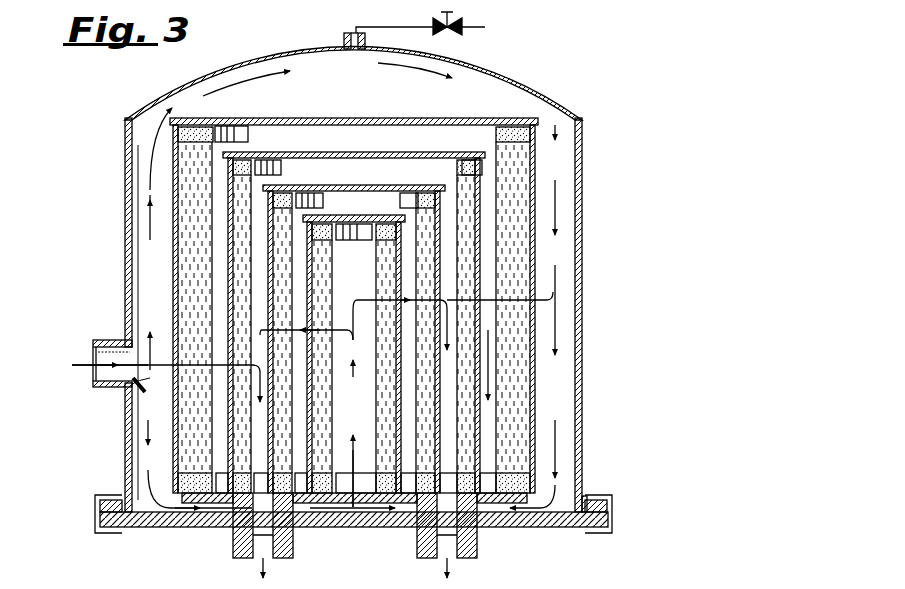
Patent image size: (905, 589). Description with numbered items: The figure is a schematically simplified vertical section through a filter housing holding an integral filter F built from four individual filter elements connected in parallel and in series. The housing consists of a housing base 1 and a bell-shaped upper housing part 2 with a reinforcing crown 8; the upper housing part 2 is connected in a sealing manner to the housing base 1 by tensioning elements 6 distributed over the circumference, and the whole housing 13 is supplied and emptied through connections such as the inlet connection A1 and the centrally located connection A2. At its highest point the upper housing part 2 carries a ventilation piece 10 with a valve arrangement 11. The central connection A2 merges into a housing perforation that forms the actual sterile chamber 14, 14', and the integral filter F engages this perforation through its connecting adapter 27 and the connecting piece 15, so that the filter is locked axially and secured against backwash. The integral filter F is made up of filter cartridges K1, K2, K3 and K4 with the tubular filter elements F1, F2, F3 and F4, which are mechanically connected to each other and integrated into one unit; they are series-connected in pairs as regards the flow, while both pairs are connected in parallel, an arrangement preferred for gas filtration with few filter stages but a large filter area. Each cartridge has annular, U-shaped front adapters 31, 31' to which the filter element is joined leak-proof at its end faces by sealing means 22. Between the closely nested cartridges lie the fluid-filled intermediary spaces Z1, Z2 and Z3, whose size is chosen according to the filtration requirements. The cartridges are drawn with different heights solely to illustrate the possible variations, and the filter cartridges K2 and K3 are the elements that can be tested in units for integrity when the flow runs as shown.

The housing base 1 is at (147, 525).
The upper housing part 2 is at (580, 284).
The tensioning elements 6 is at (95, 510).
The reinforcing crown 8 is at (587, 494).
The ventilation piece 10 is at (343, 45).
The valve arrangement 11 is at (456, 36).
The housing interior 13 is at (137, 197).
The sterile chamber 14 is at (373, 568).
The sterile chamber 14' is at (354, 324).
The connecting piece 15 is at (276, 530).
The sealing means 22 is at (510, 143).
The connecting adapter 27 is at (488, 505).
The front adapter 31 is at (354, 151).
The front adapter 31' is at (348, 159).
The connection A1 is at (110, 339).
The connection A2 is at (233, 555).
The integral filter F is at (512, 112).
The filter element F1 is at (523, 298).
The filter element F2 is at (477, 329).
The filter element F3 is at (427, 430).
The filter element F4 is at (382, 395).
The filter cartridge K1 is at (540, 171).
The filter cartridge K2 is at (484, 231).
The filter cartridge K3 is at (445, 263).
The filter cartridge K4 is at (405, 453).
The intermediary space Z1 is at (492, 198).
The intermediary space Z2 is at (453, 407).
The intermediary space Z3 is at (405, 283).